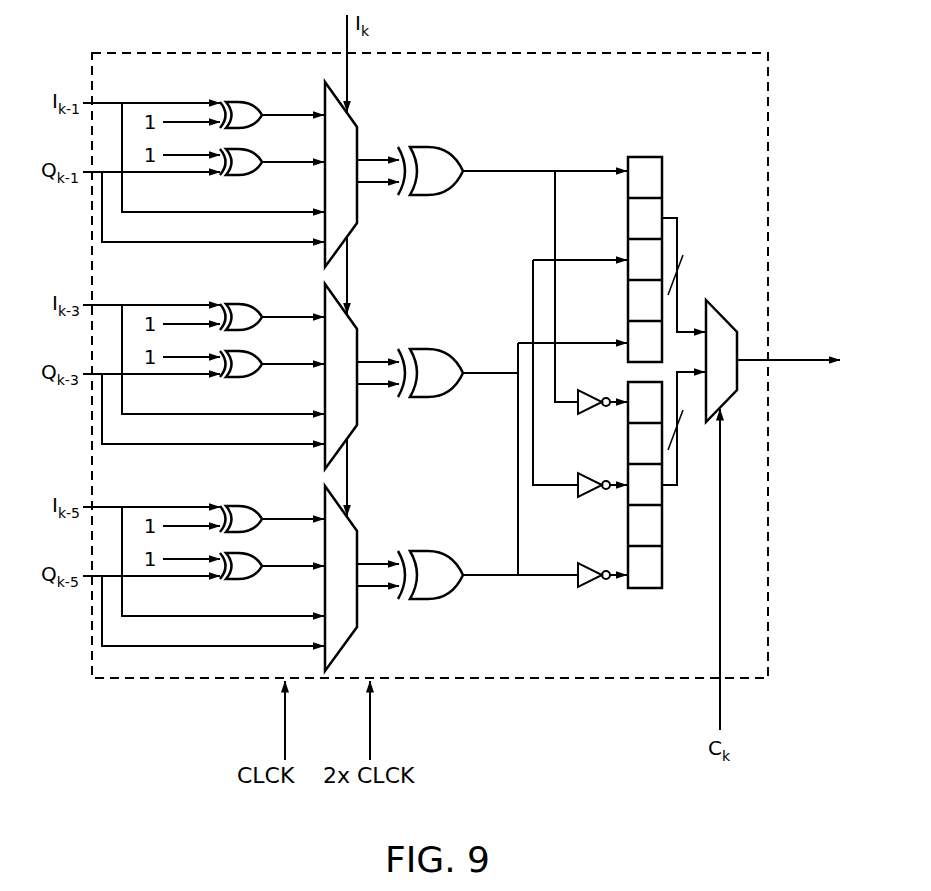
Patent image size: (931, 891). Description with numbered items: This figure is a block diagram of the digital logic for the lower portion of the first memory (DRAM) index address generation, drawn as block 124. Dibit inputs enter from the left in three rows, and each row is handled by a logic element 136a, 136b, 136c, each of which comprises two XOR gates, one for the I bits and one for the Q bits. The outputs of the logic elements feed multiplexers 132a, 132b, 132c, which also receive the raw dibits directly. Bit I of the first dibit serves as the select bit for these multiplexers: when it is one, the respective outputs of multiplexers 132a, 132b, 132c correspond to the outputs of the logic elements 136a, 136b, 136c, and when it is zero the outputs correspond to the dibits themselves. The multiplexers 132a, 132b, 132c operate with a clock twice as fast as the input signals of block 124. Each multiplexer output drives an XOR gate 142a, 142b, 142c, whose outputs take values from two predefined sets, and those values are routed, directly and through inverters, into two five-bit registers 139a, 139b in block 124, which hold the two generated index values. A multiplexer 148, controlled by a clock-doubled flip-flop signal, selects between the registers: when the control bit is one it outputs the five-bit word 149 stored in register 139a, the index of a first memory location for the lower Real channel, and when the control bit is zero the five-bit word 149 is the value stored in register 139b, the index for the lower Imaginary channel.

The block 124 is at (136, 739).
The multiplexer 132a is at (348, 116).
The multiplexer 132b is at (348, 318).
The multiplexer 132c is at (348, 520).
The logic element 136a is at (252, 138).
The logic element 136b is at (252, 340).
The logic element 136c is at (252, 542).
The register 139a is at (721, 250).
The register 139b is at (677, 576).
The XOR gate 142a is at (507, 168).
The XOR gate 142b is at (486, 369).
The XOR gate 142c is at (486, 571).
The second multiplexer 148 is at (723, 314).
The five-bit word 149 is at (798, 357).